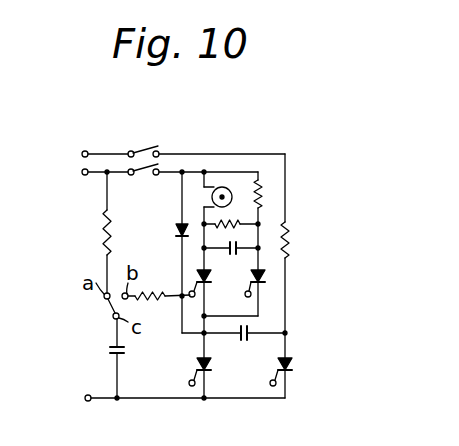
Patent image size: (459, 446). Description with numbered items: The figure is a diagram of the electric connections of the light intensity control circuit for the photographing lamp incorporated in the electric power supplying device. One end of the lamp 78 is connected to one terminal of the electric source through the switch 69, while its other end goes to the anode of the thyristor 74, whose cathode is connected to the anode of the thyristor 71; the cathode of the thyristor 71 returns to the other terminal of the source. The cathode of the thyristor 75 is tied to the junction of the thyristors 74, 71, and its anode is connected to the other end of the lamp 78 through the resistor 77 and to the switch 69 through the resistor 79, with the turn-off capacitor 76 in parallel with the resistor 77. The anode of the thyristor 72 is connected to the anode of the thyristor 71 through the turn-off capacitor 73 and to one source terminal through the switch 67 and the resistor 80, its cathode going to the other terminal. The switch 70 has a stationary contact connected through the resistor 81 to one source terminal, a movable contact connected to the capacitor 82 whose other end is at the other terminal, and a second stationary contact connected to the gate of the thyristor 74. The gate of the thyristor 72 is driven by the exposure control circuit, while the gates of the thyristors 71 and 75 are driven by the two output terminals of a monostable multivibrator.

The switch 67 is at (150, 140).
The switch 69 is at (147, 169).
The switch 70 is at (100, 311).
The thyristor 71 is at (211, 368).
The thyristor 72 is at (292, 368).
The turn-off capacitor 73 is at (244, 340).
The thyristor 74 is at (212, 283).
The thyristor 75 is at (266, 280).
The turn-off capacitor 76 is at (233, 254).
The resistor 77 is at (236, 221).
The lamp for the photographing 78 is at (226, 188).
The resistor 79 is at (262, 195).
The resistor 80 is at (290, 244).
The resistor 81 is at (103, 231).
The capacitor 82 is at (113, 358).